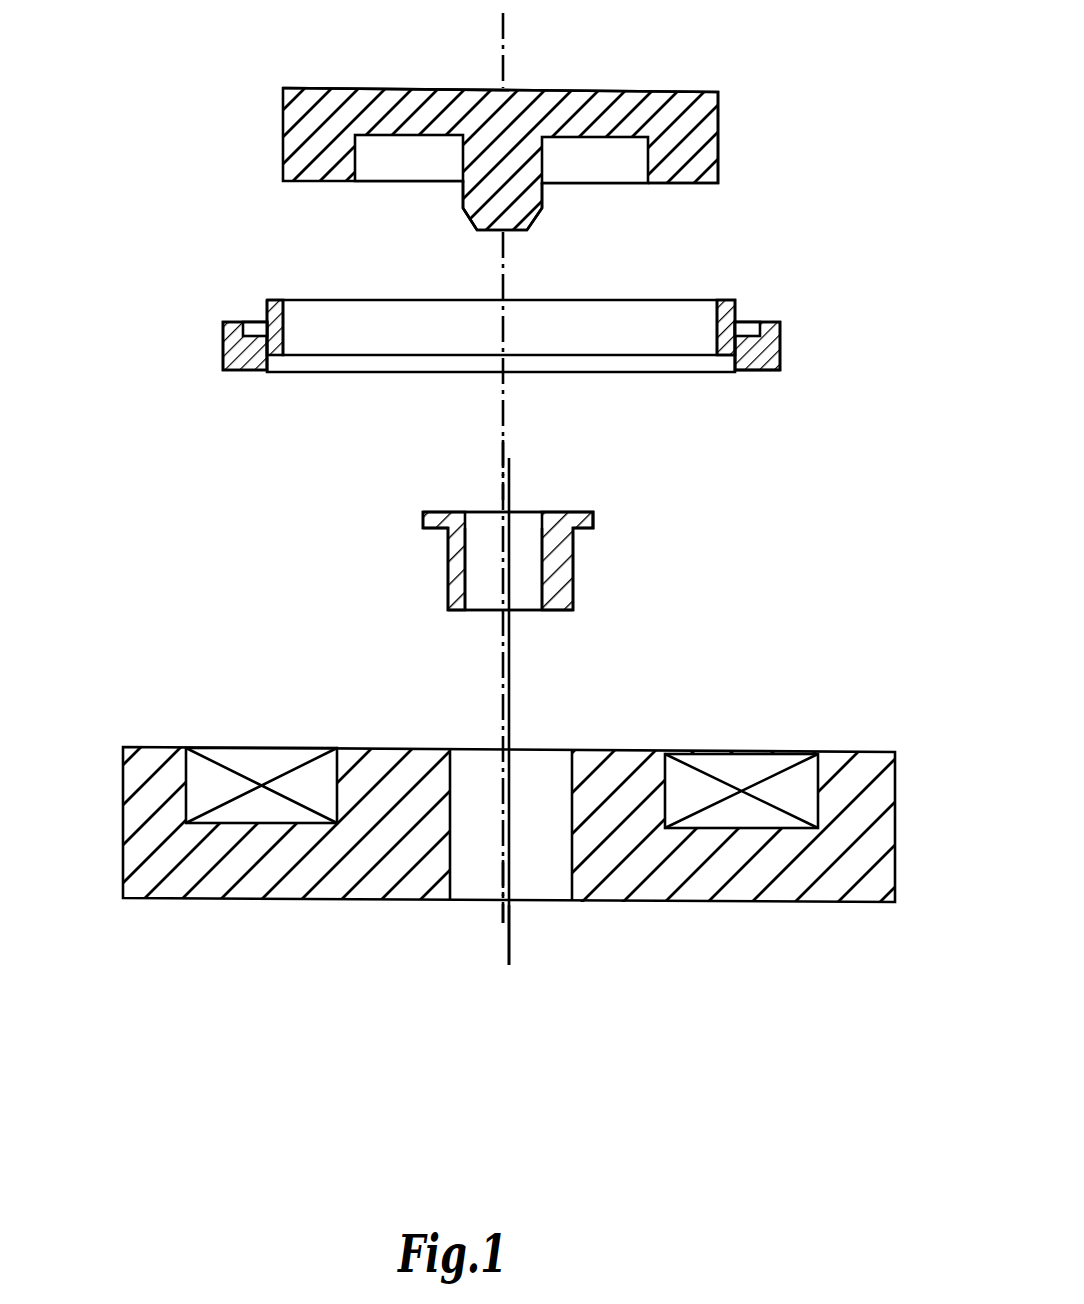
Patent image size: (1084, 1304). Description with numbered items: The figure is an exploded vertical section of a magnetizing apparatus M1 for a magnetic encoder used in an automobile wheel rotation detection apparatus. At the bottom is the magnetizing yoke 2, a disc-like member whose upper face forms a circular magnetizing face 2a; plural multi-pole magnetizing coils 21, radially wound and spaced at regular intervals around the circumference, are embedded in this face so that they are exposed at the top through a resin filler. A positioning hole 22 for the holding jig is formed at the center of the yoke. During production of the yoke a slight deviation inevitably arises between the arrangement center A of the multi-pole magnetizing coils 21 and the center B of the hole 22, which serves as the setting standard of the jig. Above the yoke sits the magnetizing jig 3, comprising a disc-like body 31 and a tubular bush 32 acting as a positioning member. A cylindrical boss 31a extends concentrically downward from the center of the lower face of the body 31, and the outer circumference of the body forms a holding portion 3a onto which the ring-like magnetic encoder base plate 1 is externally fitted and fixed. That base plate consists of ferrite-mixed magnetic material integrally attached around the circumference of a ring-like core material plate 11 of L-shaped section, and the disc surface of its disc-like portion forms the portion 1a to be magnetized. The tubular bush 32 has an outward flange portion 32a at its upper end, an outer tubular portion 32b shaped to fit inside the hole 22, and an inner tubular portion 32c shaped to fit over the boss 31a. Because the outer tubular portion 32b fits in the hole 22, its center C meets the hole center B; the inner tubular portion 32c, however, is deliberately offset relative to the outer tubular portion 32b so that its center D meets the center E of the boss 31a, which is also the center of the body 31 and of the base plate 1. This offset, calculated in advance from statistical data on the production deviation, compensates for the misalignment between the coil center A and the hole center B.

The magnetizing apparatus M1 is at (564, 325).
The magnetic encoder base plate 1 is at (535, 383).
The portion to be magnetized 1a is at (757, 372).
The core material plate 11 is at (730, 300).
The magnetizing yoke 2 is at (521, 821).
The magnetizing face 2a is at (260, 748).
The multi-pole magnetizing coil 21 is at (742, 764).
The hole for holding jig 22 is at (450, 870).
The magnetizing jig 3 is at (425, 369).
The body 31 is at (462, 168).
The boss 31a is at (531, 200).
The holding portion 3a is at (718, 143).
The tubular bush 32 is at (396, 519).
The outward flange portion 32a is at (584, 512).
The outer tubular portion 32b is at (573, 583).
The inner tubular portion 32c is at (468, 582).
The arrangement center of the multi-pole magnetizing coil A is at (500, 915).
The center of the hole for holding jig B is at (509, 920).
The center of the outer tubular portion C is at (511, 640).
The center of the inner tubular portion D is at (500, 487).
The center of the boss E is at (500, 42).